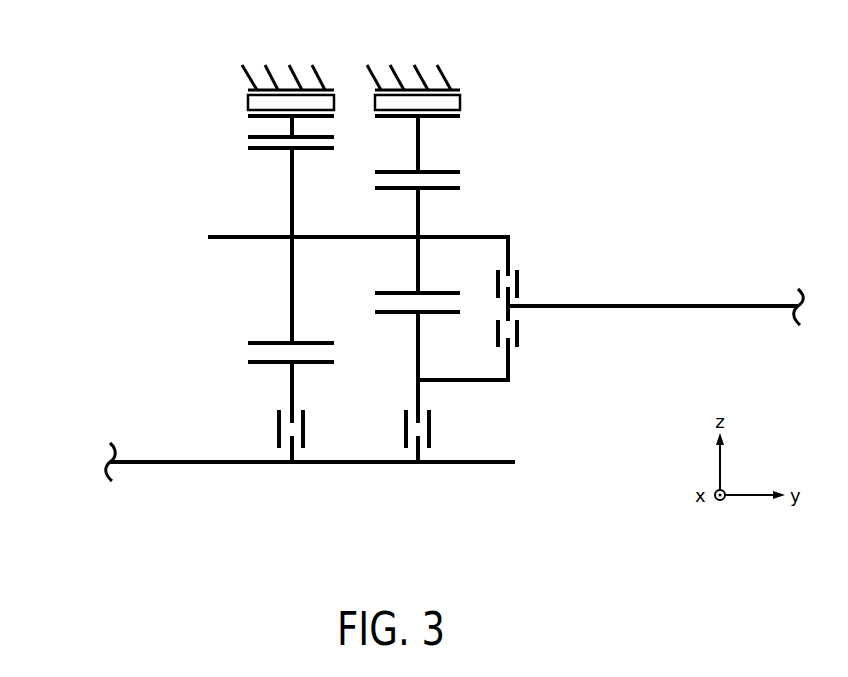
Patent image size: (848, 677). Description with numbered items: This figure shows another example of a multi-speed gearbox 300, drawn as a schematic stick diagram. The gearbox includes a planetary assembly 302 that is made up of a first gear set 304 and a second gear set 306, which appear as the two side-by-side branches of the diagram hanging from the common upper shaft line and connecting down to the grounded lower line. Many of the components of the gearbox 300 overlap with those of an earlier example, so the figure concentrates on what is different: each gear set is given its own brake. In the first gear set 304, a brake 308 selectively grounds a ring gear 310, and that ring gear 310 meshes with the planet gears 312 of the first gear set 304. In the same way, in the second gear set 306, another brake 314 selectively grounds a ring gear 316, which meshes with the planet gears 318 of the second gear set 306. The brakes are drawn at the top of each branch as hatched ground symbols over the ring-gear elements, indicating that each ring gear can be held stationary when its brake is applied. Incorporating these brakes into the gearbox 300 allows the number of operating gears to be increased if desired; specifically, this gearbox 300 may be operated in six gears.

The multi-speed gearbox 300 is at (62, 67).
The planetary assembly 302 is at (155, 89).
The first gear set 304 is at (220, 85).
The second gear set 306 is at (528, 72).
The brake 308 is at (248, 108).
The ring gear 310 is at (250, 139).
The planet gears 312 is at (250, 344).
The brake 314 is at (460, 108).
The ring gear 316 is at (460, 173).
The planet gears 318 is at (377, 294).